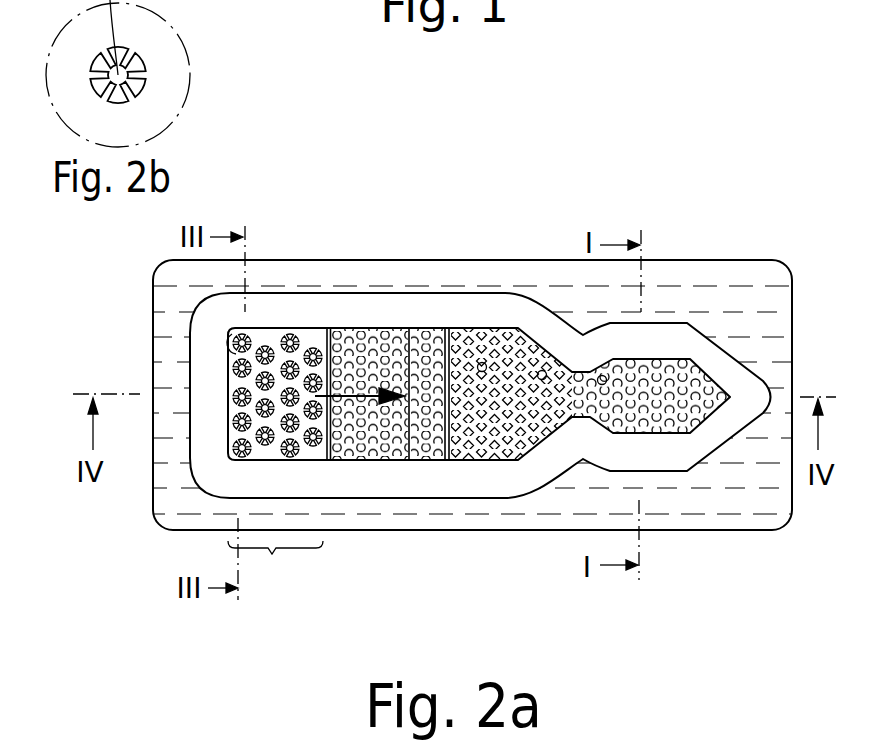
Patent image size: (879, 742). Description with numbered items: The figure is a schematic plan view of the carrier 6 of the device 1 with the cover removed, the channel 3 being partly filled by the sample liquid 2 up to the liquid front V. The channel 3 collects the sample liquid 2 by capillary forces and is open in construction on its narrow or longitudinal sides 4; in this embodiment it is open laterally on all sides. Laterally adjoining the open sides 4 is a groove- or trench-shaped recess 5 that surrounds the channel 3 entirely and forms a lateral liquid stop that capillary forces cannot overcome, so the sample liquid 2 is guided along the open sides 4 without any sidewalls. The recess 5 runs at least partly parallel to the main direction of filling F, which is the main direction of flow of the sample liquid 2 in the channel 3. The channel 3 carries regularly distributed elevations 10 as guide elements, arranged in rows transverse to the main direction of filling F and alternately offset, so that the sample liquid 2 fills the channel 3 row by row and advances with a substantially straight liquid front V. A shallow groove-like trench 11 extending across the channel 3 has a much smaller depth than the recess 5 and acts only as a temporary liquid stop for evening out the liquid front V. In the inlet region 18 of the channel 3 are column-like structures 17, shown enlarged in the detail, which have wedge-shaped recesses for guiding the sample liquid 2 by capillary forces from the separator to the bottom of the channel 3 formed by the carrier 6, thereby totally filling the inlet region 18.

The device 1 is at (405, 365).
The sample liquid 2 is at (305, 328).
The channel 3 is at (487, 462).
The open side 4 is at (552, 395).
The recess 5 is at (657, 340).
The carrier 6 is at (462, 241).
The elevations 10 is at (602, 376).
The trench 11 is at (326, 328).
The column-like structures 17 is at (235, 397).
The inlet region 18 is at (170, 489).
The main direction of filling F is at (340, 462).
The liquid front V is at (409, 462).